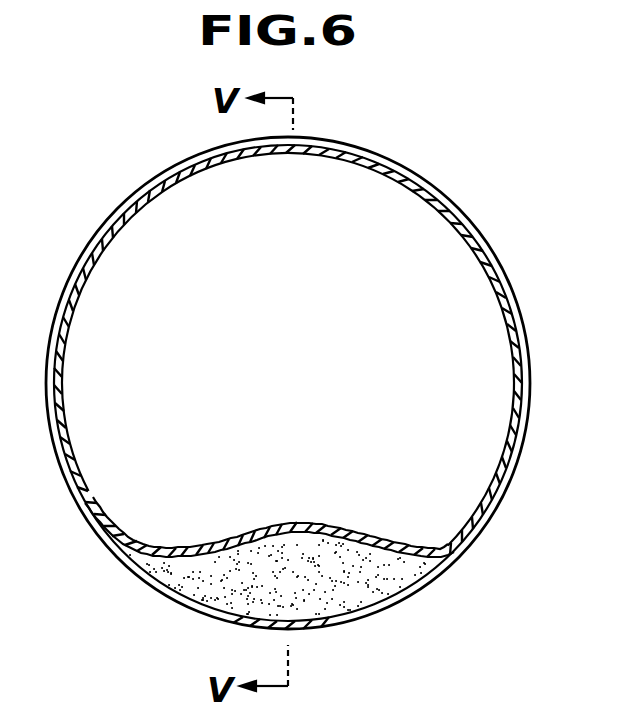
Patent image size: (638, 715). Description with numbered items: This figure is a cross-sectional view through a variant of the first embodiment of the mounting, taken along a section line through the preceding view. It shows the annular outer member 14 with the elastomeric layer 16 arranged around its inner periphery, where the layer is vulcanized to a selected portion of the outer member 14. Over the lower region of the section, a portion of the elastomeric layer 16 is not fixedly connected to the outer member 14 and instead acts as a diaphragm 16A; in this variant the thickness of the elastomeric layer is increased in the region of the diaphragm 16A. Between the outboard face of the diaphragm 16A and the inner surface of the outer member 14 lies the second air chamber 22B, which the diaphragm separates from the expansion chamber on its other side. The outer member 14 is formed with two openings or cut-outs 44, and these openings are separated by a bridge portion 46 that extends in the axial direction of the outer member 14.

The outer member 14 is at (403, 163).
The elastomeric layer 16 is at (163, 193).
The diaphragm 16A is at (322, 523).
The second air chamber 22B is at (365, 585).
The openings or cut-outs 44 is at (428, 575).
The bridge portion 46 is at (300, 630).